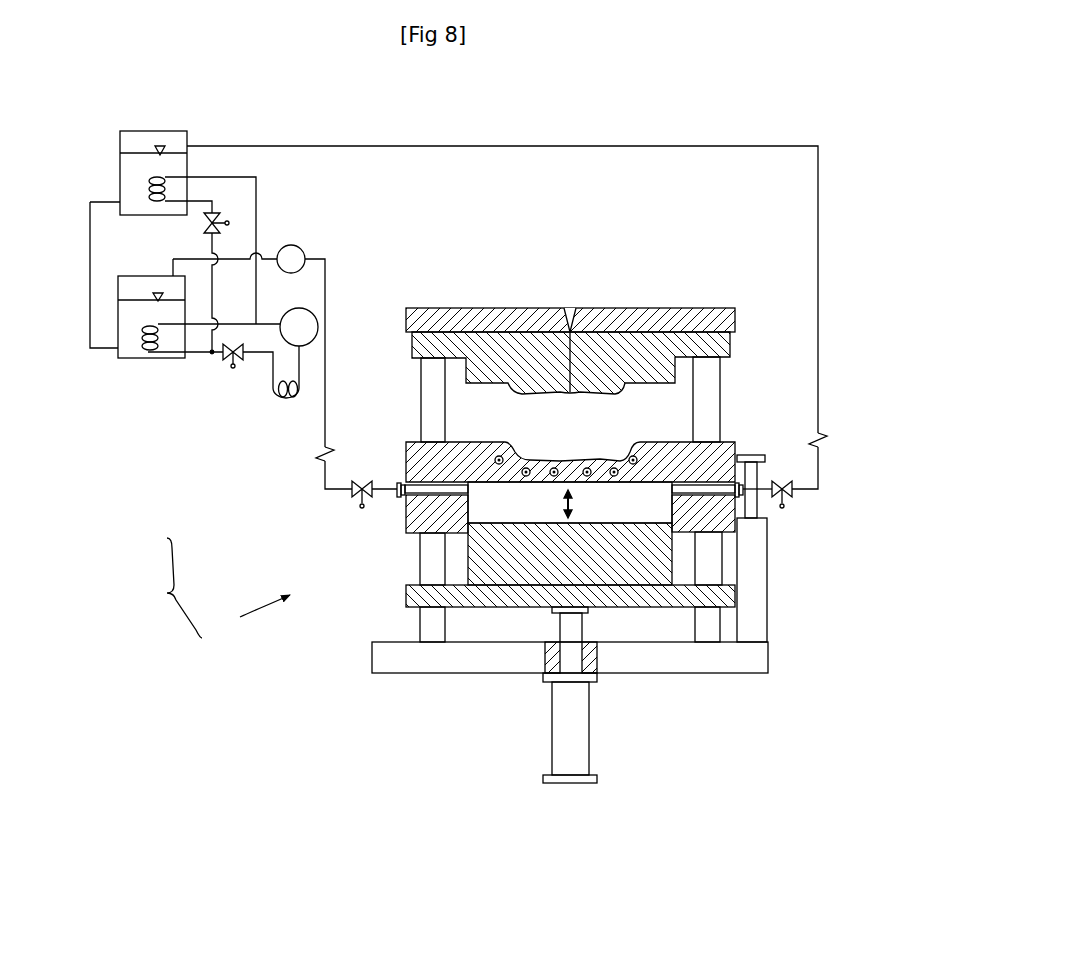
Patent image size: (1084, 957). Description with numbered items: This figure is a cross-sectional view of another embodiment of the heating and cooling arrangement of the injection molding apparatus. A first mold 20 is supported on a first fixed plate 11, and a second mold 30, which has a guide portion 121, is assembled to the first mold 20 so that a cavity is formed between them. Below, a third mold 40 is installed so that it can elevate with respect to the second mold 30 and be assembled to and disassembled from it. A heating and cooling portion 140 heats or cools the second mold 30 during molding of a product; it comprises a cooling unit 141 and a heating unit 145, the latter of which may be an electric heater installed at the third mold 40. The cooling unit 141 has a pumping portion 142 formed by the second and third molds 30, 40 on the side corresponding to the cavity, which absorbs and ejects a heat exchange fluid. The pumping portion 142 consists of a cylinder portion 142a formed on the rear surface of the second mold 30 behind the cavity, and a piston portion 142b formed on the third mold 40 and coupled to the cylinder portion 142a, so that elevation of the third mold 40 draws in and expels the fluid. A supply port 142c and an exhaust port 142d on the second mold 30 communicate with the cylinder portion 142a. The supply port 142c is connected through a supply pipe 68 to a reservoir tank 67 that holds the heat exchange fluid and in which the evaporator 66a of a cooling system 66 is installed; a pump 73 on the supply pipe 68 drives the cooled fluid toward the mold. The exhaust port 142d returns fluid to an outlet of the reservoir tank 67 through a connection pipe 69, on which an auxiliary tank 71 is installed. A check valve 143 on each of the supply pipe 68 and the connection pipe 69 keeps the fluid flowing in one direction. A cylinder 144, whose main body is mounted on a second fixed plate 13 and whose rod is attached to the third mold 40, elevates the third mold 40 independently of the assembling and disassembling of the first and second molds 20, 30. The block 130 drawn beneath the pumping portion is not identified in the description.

The first fixed plate 11 is at (713, 318).
The second fixed plate 13 is at (708, 667).
The first mold 20 is at (665, 370).
The second mold 30 is at (717, 452).
The third mold 40 is at (407, 597).
The cooling system 66 is at (197, 403).
The evaporator 66a is at (142, 347).
The reservoir tank 67 is at (118, 317).
The supply pipe 68 is at (325, 288).
The connection pipe 69 is at (497, 145).
The auxiliary tank 71 is at (187, 137).
The pump 73 is at (291, 245).
The guide portion 121 is at (430, 390).
The lower block 130 is at (618, 573).
The heating and cooling portion 140 is at (165, 588).
The cooling unit 141 is at (247, 615).
The pumping portion 142 is at (497, 512).
The cylinder portion 142a is at (765, 458).
The piston portion 142b is at (718, 488).
The supply port 142c is at (402, 515).
The exhaust port 142d is at (738, 518).
The check valve 143 is at (356, 502).
The cylinder 144 is at (578, 755).
The heating unit 145 is at (467, 458).